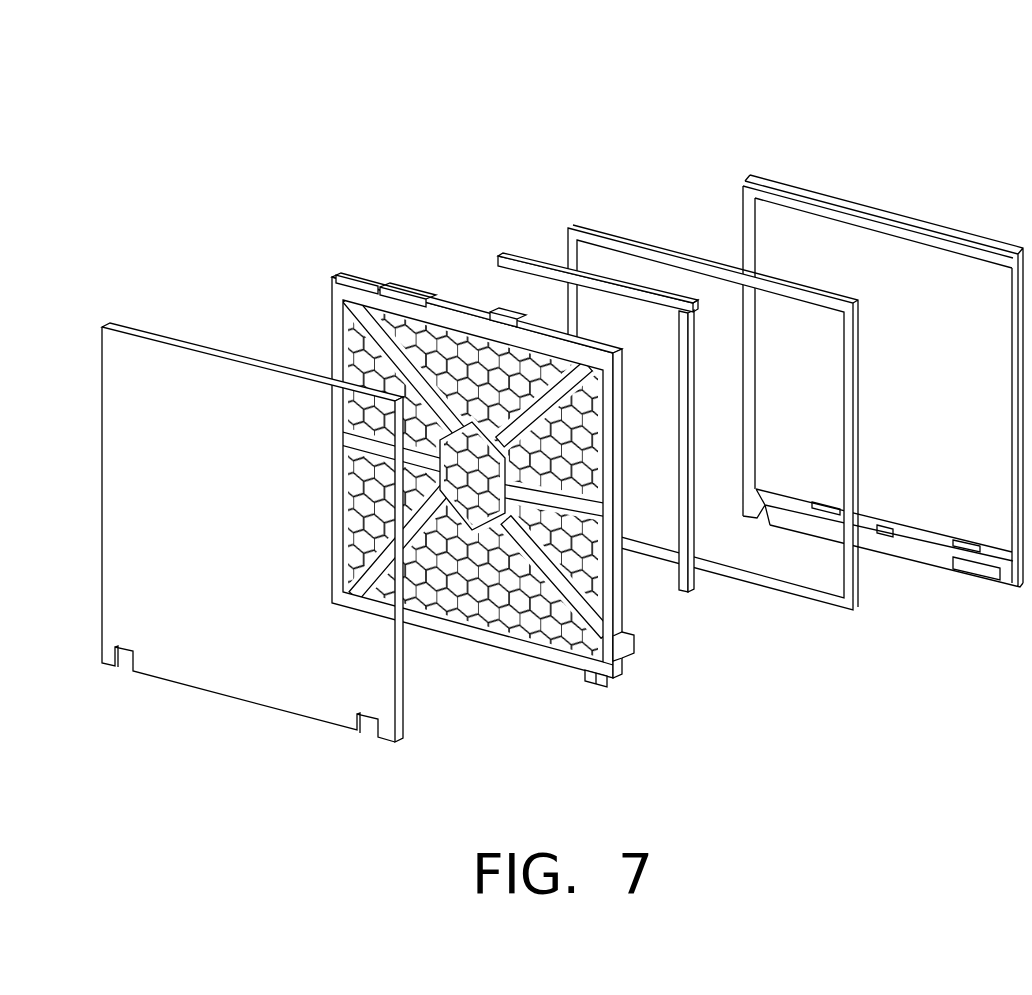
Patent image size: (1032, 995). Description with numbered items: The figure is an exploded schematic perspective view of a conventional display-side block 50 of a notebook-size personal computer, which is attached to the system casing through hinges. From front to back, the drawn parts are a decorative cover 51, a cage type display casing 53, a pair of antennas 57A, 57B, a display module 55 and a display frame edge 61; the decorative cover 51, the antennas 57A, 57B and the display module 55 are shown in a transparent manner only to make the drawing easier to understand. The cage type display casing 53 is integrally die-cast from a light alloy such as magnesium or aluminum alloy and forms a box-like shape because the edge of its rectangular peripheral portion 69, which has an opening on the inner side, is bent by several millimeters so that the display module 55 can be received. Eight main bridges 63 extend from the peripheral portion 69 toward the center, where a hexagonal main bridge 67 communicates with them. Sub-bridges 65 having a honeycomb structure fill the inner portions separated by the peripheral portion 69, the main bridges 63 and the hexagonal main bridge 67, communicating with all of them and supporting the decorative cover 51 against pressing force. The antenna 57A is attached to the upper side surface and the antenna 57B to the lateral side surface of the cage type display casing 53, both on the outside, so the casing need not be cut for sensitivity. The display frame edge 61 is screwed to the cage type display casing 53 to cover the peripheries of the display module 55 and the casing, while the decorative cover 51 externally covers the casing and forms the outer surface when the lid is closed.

The display-side block 50 is at (408, 132).
The decorative cover 51 is at (167, 338).
The cage type display casing 53 is at (441, 478).
The display module 55 is at (660, 237).
The antenna 57A is at (523, 253).
The antenna 57B is at (697, 583).
The display frame edge 61 is at (900, 218).
The main bridges 63 is at (567, 597).
The sub-bridges 65 is at (491, 610).
The hexagonal main bridge 67 is at (352, 323).
The peripheral portion 69 is at (620, 593).